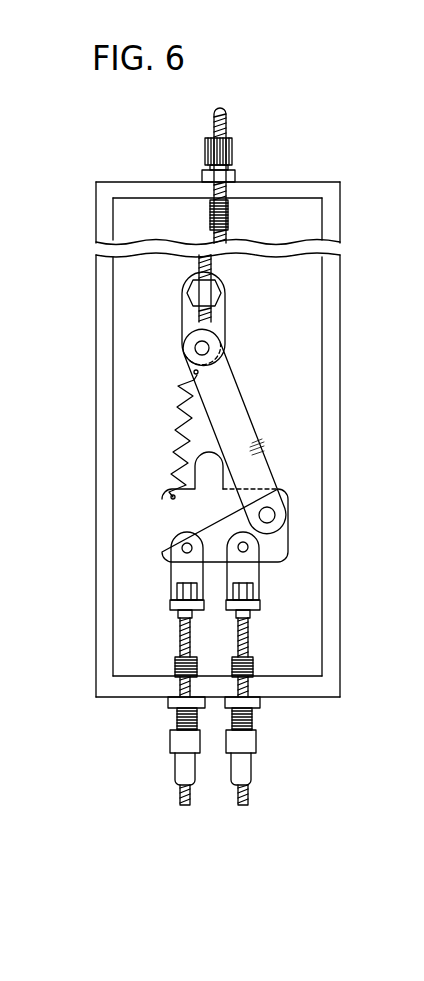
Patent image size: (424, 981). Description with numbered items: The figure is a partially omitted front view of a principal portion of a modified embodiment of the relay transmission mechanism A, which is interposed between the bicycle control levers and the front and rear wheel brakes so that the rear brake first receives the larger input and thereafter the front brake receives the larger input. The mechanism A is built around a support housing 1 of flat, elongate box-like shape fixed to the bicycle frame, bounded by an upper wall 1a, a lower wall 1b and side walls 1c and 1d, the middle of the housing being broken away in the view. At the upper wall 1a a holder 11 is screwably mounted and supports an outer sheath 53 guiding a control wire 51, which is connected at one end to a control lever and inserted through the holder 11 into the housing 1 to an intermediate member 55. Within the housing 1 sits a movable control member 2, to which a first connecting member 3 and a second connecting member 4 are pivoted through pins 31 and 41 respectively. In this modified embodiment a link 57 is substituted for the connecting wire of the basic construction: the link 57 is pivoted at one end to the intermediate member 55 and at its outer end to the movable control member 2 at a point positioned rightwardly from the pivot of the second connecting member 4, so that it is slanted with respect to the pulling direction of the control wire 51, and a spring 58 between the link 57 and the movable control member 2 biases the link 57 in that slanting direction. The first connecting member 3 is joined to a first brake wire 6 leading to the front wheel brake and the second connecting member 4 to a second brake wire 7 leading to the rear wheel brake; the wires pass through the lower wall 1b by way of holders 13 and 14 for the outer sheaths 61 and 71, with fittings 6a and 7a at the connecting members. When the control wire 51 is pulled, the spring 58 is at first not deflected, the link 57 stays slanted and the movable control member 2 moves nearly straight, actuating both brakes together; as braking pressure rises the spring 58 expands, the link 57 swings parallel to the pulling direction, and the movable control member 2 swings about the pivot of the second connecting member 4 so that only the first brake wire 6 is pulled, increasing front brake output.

The support housing 1 is at (216, 448).
The upper wall 1a is at (278, 187).
The lower wall 1b is at (315, 690).
The right side wall of frame 1c is at (333, 447).
The left side wall of frame 1d is at (100, 453).
The movable control member 2 is at (292, 548).
The first connecting member 3 is at (180, 568).
The second connecting member 4 is at (253, 572).
The first brake wire 6 is at (180, 640).
The second brake wire 7 is at (248, 643).
The first rod nut 6a is at (182, 593).
The second rod nut 7a is at (253, 593).
The holder 11 is at (233, 150).
The holder 13 is at (177, 718).
The holder 14 is at (252, 722).
The pin 31 is at (180, 543).
The pin 41 is at (247, 545).
The control wire 51 is at (223, 237).
The outer sheath 53 is at (227, 128).
The intermediate member 55 is at (217, 320).
The link 57 is at (240, 418).
The spring 58 is at (178, 433).
The outer sheath 61 is at (177, 770).
The outer sheath 71 is at (253, 768).
The relay transmission mechanism A is at (347, 330).